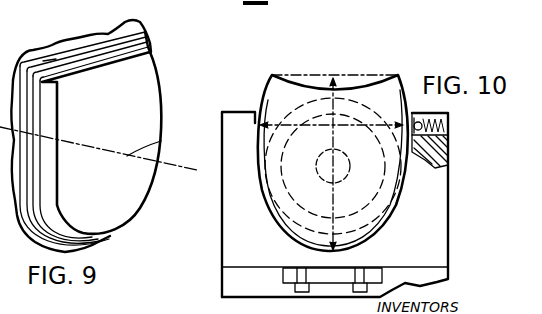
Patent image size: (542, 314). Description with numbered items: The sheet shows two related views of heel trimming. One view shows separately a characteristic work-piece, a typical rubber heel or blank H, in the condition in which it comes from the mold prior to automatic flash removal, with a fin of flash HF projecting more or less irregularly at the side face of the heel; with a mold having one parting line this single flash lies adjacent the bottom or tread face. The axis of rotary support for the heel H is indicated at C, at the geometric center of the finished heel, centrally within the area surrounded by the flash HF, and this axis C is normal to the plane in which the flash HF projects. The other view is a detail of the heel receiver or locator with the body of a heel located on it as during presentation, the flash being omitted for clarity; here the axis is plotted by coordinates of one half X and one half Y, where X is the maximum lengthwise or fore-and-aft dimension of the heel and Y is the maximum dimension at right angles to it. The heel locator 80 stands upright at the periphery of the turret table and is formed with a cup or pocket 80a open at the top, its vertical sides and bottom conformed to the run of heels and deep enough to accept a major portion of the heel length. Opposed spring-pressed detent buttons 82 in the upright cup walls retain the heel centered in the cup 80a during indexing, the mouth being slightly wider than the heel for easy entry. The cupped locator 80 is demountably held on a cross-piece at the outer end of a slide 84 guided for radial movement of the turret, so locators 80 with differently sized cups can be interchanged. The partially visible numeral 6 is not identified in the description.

In FIG. 10, the heel locator 80 is at (248, 201).
In FIG. 10, the locator cup 80a is at (403, 193).
In FIG. 10, the spring-pressed detent buttons 82 is at (414, 118).
In FIG. 10, the slide 84 is at (327, 275).
In FIG. 9, the rubber heel H is at (147, 98).
In FIG. 10, the rubber heel H is at (400, 77).
In FIG. 9, the fin of flash HF is at (61, 76).
In FIG. 9, the axis of rotary support C is at (163, 142).
In FIG. 10, the maximum lengthwise dimension X is at (346, 178).
In FIG. 10, the maximum transverse dimension Y is at (298, 110).
In FIG. 9, the layer (partial numeral) 6 is at (28, 51).